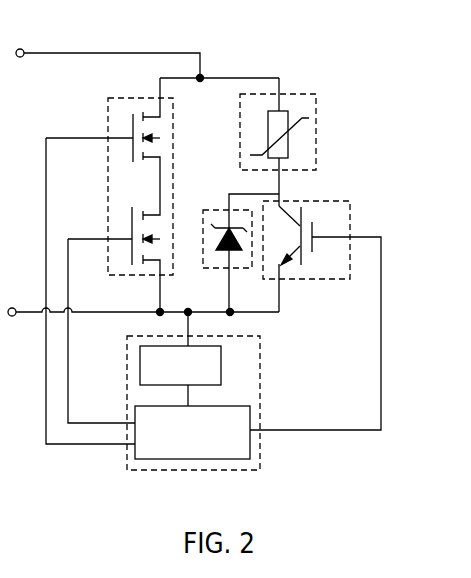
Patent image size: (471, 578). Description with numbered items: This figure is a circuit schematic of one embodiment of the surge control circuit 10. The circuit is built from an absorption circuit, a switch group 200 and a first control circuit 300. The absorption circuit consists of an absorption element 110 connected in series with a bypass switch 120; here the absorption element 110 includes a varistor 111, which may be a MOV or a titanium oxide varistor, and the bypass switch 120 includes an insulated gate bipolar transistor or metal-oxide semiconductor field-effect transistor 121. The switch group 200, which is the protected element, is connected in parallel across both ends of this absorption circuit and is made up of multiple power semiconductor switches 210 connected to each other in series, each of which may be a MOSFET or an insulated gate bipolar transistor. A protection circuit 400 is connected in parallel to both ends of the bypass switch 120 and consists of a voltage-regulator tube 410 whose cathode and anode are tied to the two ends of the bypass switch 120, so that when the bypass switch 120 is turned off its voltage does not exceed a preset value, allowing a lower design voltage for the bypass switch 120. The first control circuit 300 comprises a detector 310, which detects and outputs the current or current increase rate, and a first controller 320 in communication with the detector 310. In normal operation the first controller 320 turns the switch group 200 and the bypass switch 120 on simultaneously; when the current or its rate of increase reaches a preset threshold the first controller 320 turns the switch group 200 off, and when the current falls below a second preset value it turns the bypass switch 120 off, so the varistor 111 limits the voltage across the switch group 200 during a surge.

The surge control circuit 10 is at (224, 35).
The switch group 200 is at (108, 202).
The power semiconductor switch 210 is at (132, 222).
The absorption element 110 is at (316, 141).
The varistor 111 is at (288, 112).
The protection circuit 400 is at (206, 210).
The voltage-regulator tube 410 is at (245, 230).
The bypass switch 120 is at (332, 279).
The insulated gate bipolar transistor or metal-oxide semiconductor field-effect tran 121 is at (316, 226).
The first control circuit 300 is at (127, 468).
The detector 310 is at (221, 372).
The first controller 320 is at (250, 407).